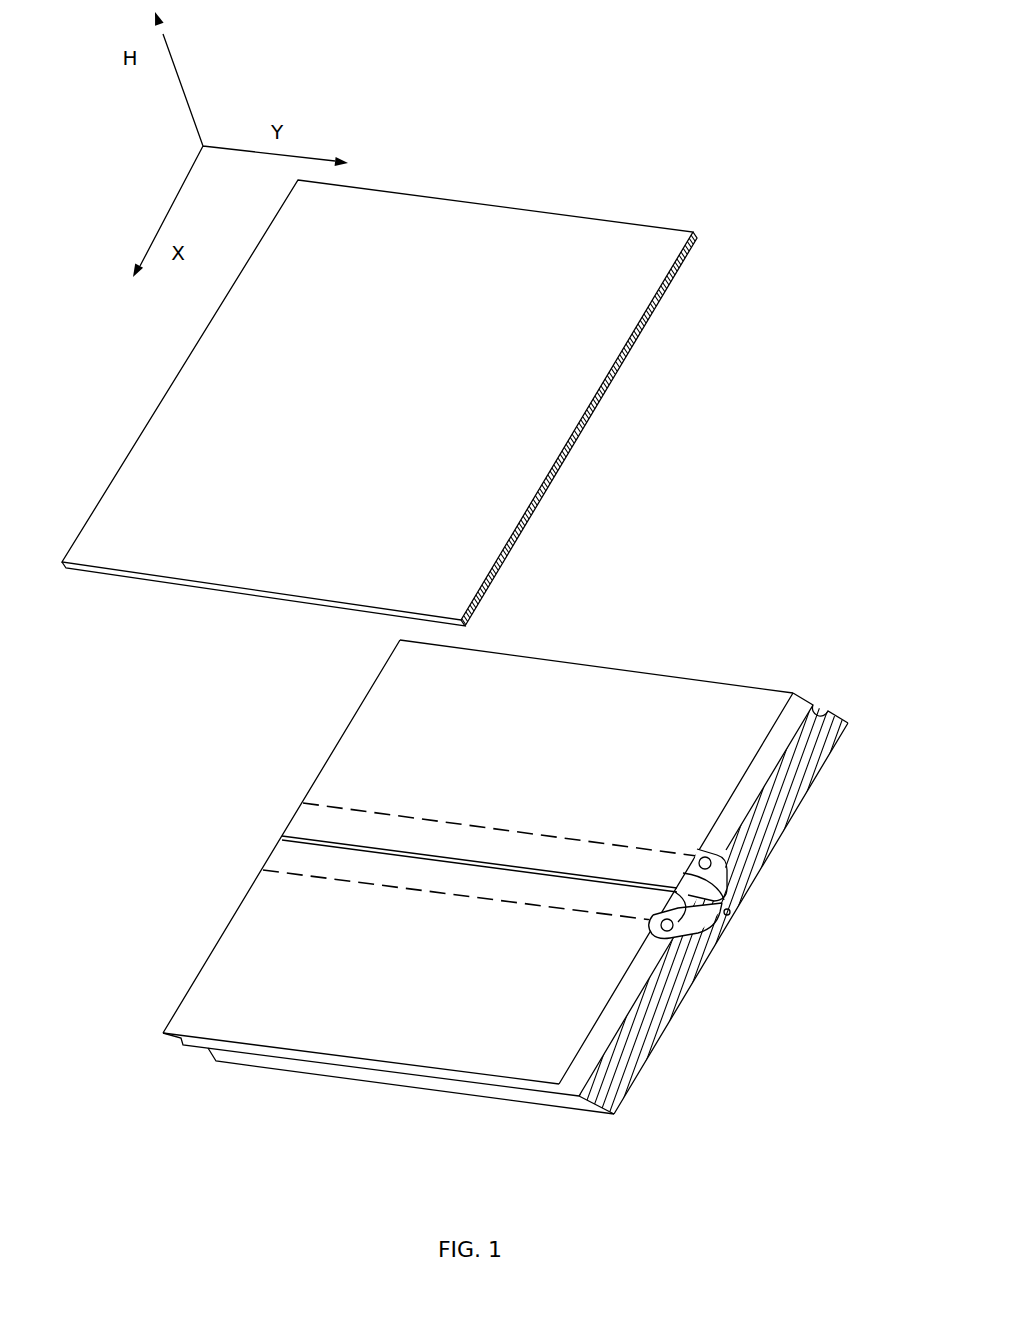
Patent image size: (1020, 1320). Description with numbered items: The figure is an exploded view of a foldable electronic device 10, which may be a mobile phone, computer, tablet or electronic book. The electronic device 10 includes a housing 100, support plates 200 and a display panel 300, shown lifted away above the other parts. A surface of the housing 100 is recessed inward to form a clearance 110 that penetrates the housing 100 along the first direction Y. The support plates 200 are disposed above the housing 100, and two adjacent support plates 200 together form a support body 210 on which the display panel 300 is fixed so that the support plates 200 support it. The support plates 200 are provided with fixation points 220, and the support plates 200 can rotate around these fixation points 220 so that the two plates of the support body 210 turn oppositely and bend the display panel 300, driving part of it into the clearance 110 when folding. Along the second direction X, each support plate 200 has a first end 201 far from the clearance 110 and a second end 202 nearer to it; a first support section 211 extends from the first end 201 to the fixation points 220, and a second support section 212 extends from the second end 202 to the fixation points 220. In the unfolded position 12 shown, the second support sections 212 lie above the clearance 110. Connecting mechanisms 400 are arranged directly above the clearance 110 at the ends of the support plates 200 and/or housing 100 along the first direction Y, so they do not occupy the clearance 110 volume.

The electronic device 10 is at (645, 186).
The unfolded position 12 is at (46, 680).
The housing 100 is at (620, 1065).
The clearance 110 is at (705, 907).
The support plate 200 is at (362, 783).
The first end 201 is at (552, 657).
The second end 202 is at (712, 892).
The support body 210 is at (287, 673).
The first support section 211 is at (588, 765).
The second support section 212 is at (610, 858).
The fixation point 220 is at (718, 857).
The display panel 300 is at (173, 427).
The connecting mechanism 400 is at (717, 873).